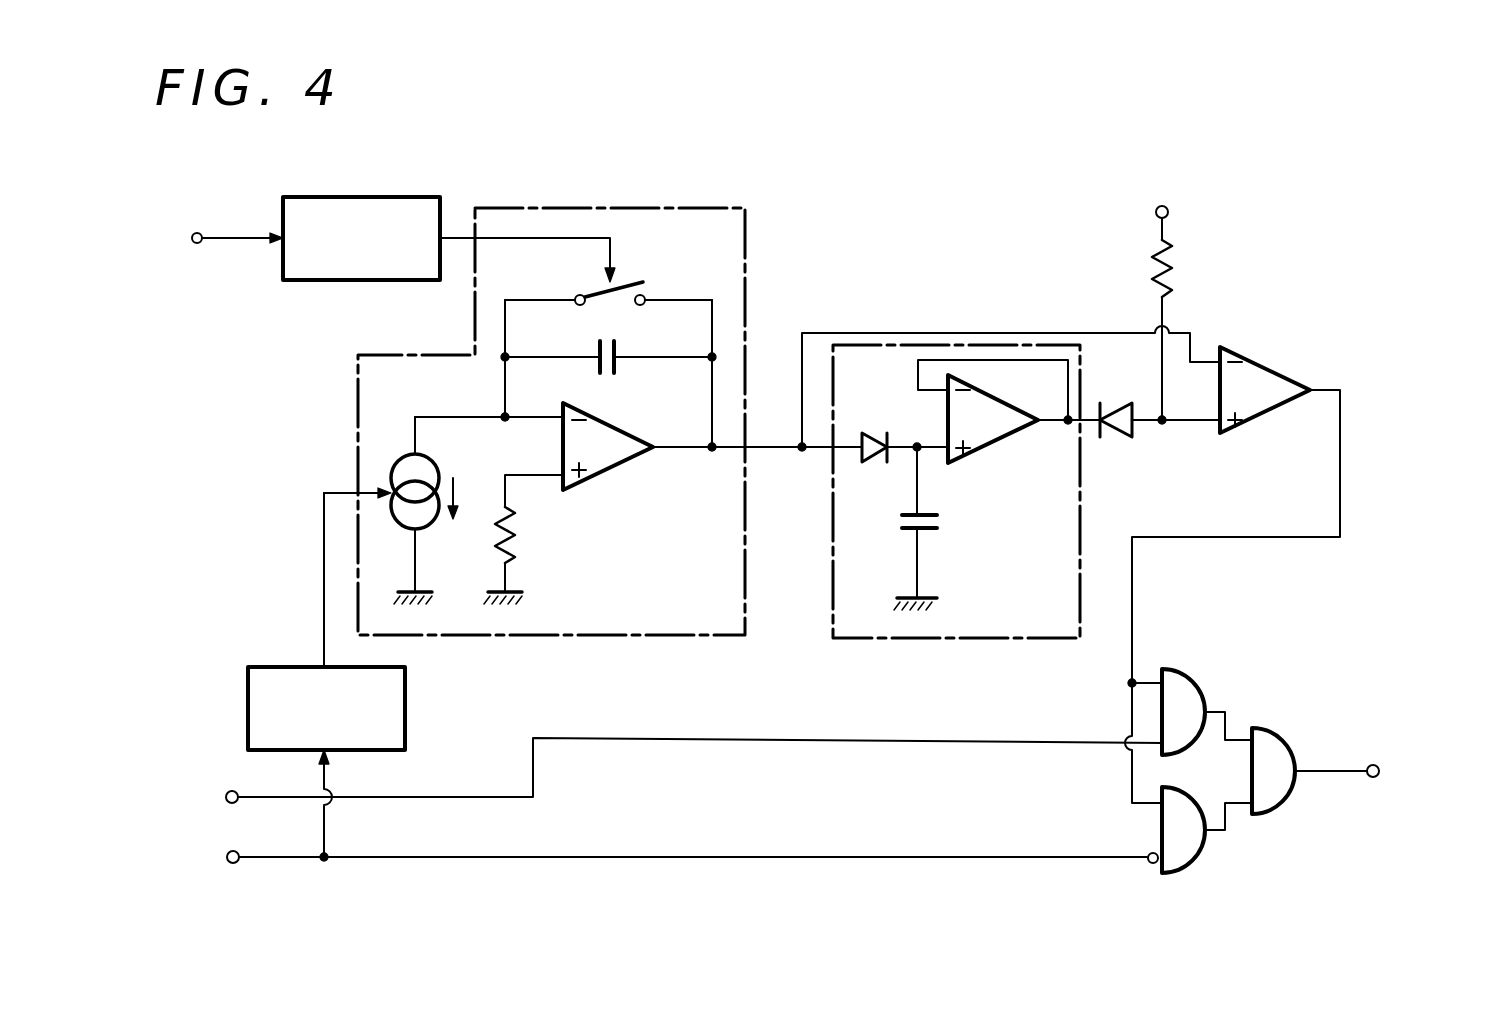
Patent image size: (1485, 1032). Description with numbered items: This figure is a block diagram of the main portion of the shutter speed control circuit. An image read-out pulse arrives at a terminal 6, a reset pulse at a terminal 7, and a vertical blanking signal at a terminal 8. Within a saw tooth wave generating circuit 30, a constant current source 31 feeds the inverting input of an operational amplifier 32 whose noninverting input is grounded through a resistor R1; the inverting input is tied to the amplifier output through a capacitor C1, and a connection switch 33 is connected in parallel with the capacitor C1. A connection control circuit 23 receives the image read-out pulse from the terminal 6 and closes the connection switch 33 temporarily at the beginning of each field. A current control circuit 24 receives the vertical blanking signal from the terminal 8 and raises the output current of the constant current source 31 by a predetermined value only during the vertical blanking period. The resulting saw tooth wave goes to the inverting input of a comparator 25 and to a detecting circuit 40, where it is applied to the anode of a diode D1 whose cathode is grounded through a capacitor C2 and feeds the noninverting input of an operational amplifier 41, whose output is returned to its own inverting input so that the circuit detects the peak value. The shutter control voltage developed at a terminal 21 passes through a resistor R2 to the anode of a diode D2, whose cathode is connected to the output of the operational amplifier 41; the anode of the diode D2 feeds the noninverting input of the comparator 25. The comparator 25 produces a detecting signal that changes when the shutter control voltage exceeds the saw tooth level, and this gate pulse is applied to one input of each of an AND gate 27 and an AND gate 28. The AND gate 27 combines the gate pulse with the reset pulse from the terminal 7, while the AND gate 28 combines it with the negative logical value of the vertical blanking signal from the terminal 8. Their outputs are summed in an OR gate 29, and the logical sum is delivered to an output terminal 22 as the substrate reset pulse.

The terminal 6 is at (197, 232).
The connection control circuit 23 is at (388, 197).
The connection switch 33 is at (628, 285).
The capacitor C1 is at (614, 368).
The constant current source 31 is at (440, 462).
The operational amplifier 32 is at (617, 468).
The resistor R1 is at (518, 540).
The saw tooth wave generating circuit 30 is at (540, 636).
The detecting circuit 40 is at (920, 640).
The diode D1 is at (876, 466).
The capacitor C2 is at (938, 528).
The operational amplifier 41 is at (998, 443).
The diode D2 is at (1124, 438).
The terminal 21 is at (1162, 206).
The resistor R2 is at (1172, 268).
The comparator 25 is at (1270, 366).
The current control circuit 24 is at (405, 716).
The terminal 7 is at (232, 791).
The terminal 8 is at (233, 863).
The AND gate 27 is at (1196, 688).
The AND gate 28 is at (1194, 860).
The OR gate 29 is at (1284, 735).
The output terminal 22 is at (1373, 777).